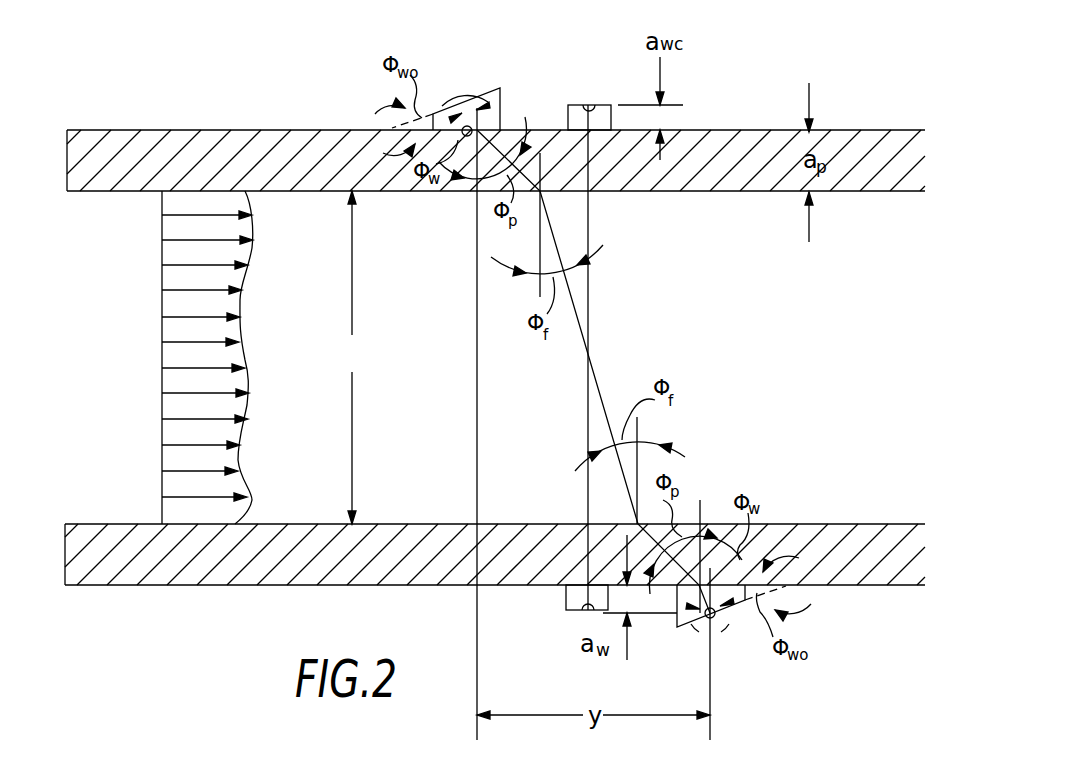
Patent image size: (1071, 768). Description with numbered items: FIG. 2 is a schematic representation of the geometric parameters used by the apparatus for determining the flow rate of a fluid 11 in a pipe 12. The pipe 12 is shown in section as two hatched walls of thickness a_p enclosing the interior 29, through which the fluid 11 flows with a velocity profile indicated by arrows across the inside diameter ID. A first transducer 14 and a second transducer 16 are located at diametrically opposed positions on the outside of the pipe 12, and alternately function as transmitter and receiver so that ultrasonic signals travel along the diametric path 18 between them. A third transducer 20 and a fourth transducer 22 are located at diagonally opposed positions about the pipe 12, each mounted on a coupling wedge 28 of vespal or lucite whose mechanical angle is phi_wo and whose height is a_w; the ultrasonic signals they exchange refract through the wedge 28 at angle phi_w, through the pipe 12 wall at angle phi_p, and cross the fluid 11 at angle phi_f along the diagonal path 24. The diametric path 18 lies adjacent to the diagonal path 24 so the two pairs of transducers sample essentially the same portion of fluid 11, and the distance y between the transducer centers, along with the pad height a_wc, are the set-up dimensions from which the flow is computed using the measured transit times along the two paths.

The fluid 11 is at (165, 228).
The pipe 12 is at (204, 136).
The first transducer 14 is at (589, 105).
The second transducer 16 is at (584, 610).
The diametric path 18 is at (600, 292).
The third transducer 20 is at (719, 623).
The fourth transducer 22 is at (467, 125).
The diagonal path 24 is at (605, 379).
The coupling wedge 28 is at (508, 99).
The interior 29 is at (318, 357).